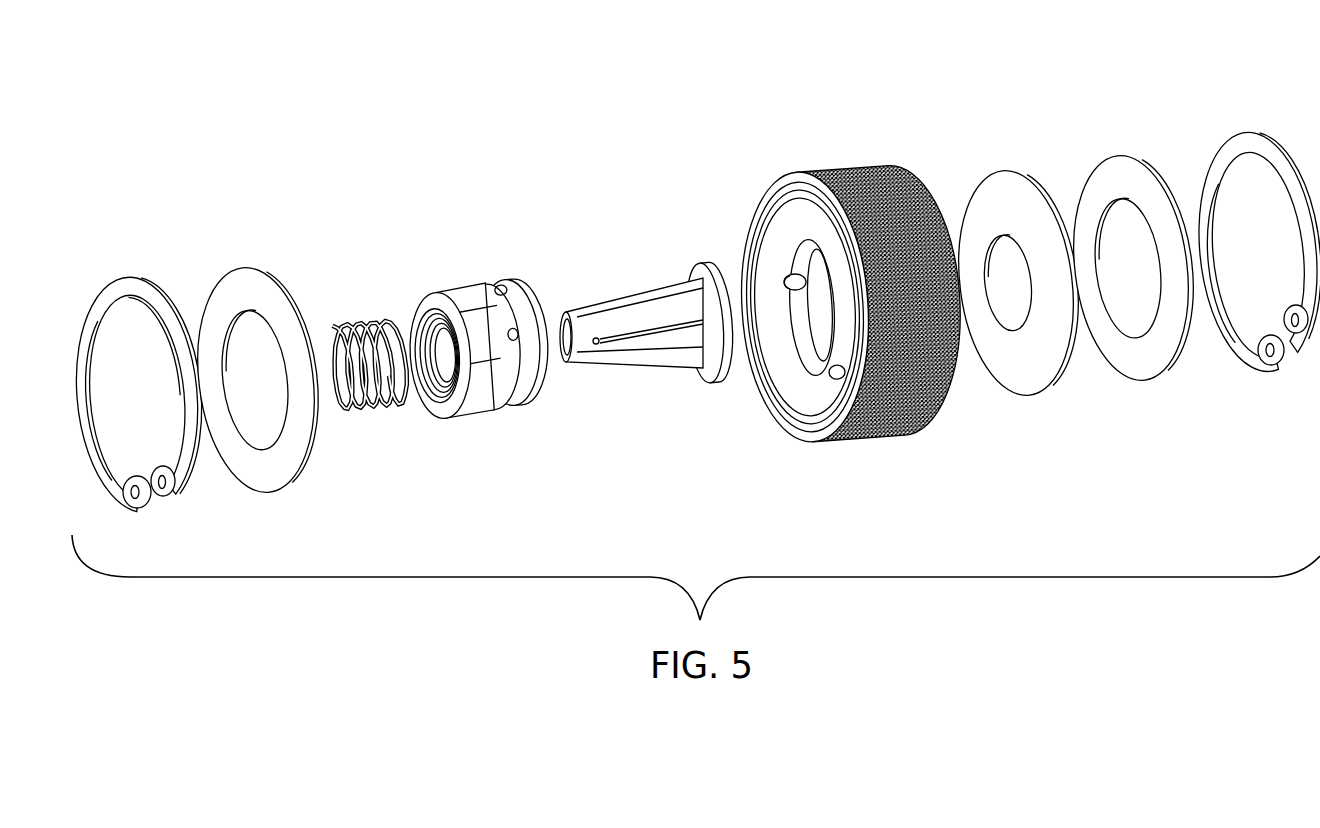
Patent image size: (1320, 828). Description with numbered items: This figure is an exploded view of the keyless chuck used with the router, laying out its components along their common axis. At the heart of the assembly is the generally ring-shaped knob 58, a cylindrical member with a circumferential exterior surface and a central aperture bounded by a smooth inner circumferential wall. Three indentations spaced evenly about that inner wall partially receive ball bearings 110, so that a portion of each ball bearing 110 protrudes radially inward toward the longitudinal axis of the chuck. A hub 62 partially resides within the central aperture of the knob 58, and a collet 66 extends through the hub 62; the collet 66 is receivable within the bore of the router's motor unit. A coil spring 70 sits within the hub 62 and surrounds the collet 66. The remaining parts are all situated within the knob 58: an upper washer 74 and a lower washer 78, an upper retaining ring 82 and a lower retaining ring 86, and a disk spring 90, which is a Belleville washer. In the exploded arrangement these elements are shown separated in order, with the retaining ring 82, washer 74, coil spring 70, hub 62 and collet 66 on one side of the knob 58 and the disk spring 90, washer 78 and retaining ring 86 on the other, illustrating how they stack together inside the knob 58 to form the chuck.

The knob 58 is at (830, 168).
The hub 62 is at (490, 280).
The collet 66 is at (623, 297).
The coil spring 70 is at (352, 327).
The upper washer 74 is at (245, 268).
The lower washer 78 is at (1118, 155).
The upper retaining ring 82 is at (127, 277).
The lower retaining ring 86 is at (1245, 132).
The disk spring 90 is at (1003, 170).
The ball bearing 110 is at (790, 280).